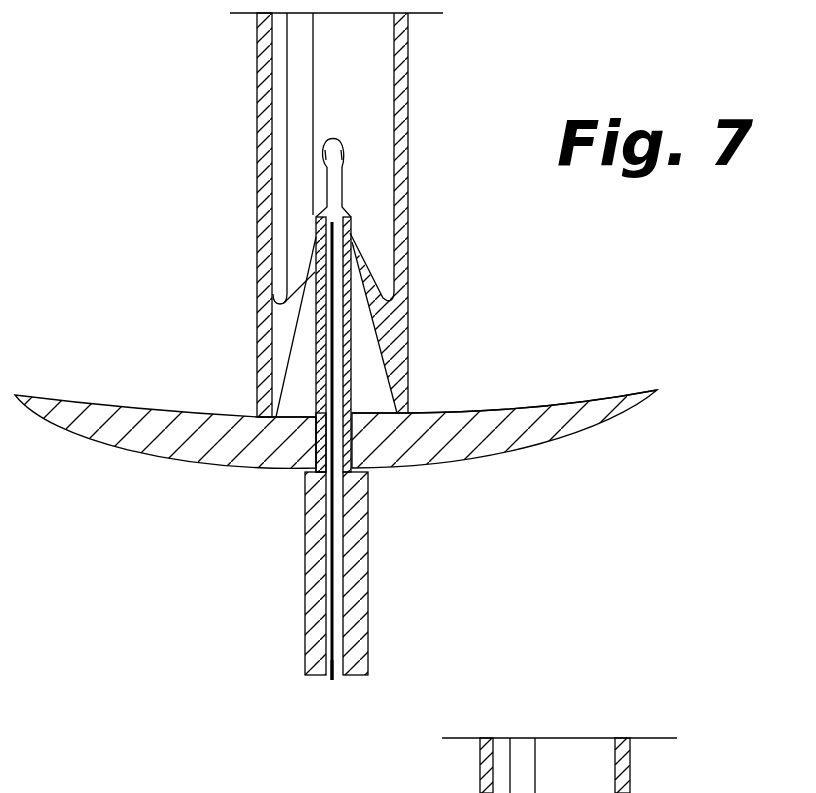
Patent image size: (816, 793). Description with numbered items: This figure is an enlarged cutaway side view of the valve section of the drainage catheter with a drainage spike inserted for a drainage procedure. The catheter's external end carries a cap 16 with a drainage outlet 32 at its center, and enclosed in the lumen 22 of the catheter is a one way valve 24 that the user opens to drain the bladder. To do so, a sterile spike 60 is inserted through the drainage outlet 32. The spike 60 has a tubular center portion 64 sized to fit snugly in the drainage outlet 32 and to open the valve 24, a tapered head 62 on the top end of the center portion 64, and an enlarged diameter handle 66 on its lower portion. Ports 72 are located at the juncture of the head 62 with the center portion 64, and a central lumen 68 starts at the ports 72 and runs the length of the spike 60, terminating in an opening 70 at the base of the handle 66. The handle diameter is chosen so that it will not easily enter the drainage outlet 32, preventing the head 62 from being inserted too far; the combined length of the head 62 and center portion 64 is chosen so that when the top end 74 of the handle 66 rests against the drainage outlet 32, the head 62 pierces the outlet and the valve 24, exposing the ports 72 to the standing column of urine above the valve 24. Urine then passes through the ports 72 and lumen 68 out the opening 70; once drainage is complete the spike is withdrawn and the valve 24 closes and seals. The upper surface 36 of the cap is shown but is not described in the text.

The cap 16 is at (497, 457).
The lumen 22 is at (298, 50).
The one way valve 24 is at (352, 270).
The drainage outlet 32 is at (352, 432).
The flange upper surface 36 is at (463, 412).
The spike 60 is at (357, 153).
The tapered head 62 is at (326, 156).
The center portion 64 is at (322, 373).
The handle 66 is at (315, 618).
The central lumen 68 is at (340, 545).
The opening 70 is at (340, 678).
The ports 72 is at (322, 192).
The top end 74 is at (304, 473).